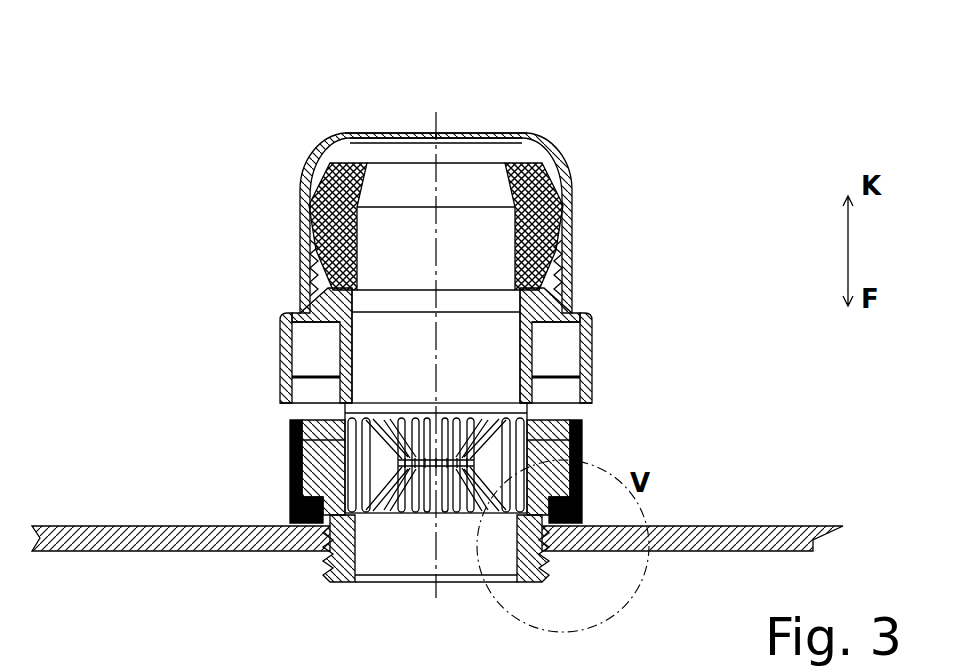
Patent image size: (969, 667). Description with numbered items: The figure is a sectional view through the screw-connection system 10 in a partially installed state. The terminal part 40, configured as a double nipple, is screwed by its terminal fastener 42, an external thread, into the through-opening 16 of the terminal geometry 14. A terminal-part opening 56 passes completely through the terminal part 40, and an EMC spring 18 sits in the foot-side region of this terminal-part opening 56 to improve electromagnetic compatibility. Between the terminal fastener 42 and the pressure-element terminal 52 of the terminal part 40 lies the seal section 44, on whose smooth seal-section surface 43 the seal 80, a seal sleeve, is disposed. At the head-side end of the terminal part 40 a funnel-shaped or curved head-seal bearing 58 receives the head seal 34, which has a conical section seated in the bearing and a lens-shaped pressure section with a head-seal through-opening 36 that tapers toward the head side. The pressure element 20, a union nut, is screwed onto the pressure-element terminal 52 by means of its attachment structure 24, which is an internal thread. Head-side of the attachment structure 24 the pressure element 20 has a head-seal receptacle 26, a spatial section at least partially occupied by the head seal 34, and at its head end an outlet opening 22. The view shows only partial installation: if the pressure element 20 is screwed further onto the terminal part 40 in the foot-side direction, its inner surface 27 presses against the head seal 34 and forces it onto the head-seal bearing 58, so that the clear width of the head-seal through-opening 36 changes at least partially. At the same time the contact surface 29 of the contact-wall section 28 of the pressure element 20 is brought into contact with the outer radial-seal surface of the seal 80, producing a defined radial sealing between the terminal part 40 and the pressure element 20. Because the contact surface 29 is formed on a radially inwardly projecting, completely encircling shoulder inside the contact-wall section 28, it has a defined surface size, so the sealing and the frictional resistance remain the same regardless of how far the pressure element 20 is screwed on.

The screw-connection system 10 is at (222, 117).
The terminal geometry 14 is at (672, 527).
The through-opening 16 is at (420, 562).
The EMC spring 18 is at (352, 415).
The pressure element 20 is at (288, 198).
The outlet opening 22 is at (468, 133).
The attachment structure 24 is at (555, 262).
The head-seal receptacle 26 is at (355, 150).
The inner surface 27 is at (524, 149).
The contact-wall section 28 is at (585, 352).
The contact surface 29 is at (583, 396).
The head seal 34 is at (328, 232).
The head-seal through-opening 36 is at (390, 185).
The terminal part 40 is at (262, 350).
The terminal fastener 42 is at (540, 568).
The seal-section surface 43 is at (572, 450).
The seal section 44 is at (305, 465).
The pressure-element terminal 52 is at (318, 320).
The terminal-part opening 56 is at (387, 337).
The head-seal bearing 58 is at (352, 303).
The seal 80 is at (288, 437).